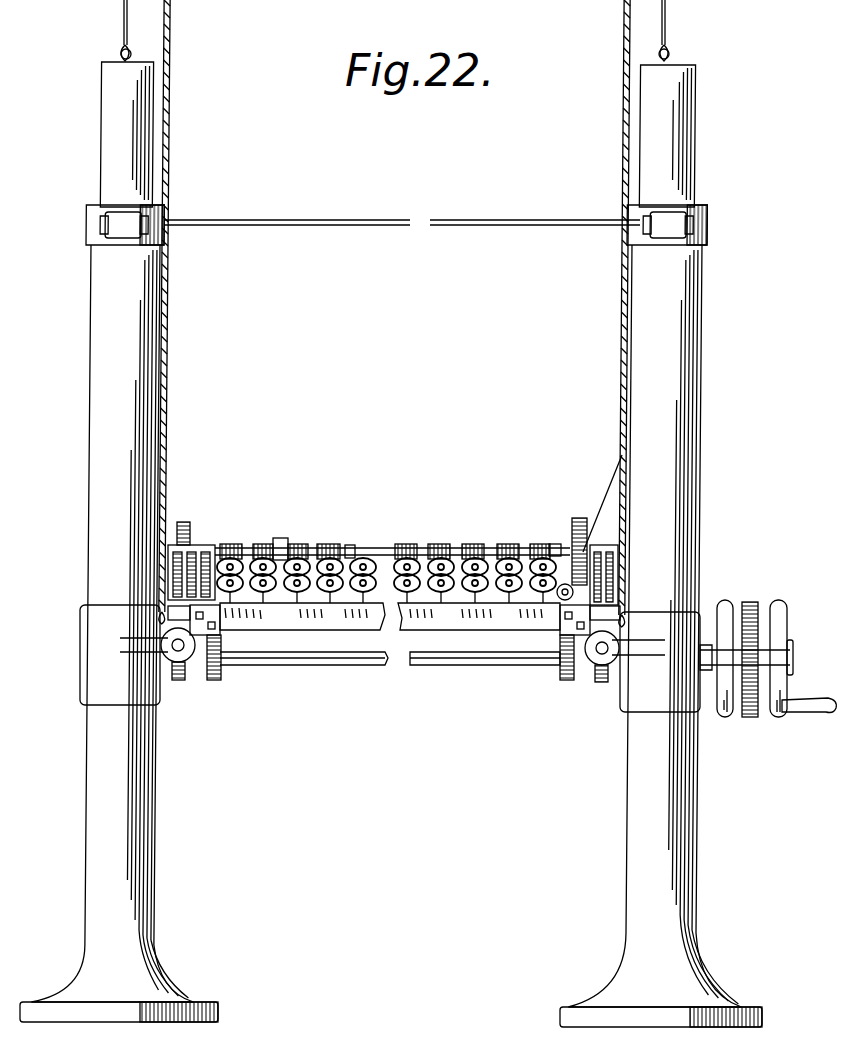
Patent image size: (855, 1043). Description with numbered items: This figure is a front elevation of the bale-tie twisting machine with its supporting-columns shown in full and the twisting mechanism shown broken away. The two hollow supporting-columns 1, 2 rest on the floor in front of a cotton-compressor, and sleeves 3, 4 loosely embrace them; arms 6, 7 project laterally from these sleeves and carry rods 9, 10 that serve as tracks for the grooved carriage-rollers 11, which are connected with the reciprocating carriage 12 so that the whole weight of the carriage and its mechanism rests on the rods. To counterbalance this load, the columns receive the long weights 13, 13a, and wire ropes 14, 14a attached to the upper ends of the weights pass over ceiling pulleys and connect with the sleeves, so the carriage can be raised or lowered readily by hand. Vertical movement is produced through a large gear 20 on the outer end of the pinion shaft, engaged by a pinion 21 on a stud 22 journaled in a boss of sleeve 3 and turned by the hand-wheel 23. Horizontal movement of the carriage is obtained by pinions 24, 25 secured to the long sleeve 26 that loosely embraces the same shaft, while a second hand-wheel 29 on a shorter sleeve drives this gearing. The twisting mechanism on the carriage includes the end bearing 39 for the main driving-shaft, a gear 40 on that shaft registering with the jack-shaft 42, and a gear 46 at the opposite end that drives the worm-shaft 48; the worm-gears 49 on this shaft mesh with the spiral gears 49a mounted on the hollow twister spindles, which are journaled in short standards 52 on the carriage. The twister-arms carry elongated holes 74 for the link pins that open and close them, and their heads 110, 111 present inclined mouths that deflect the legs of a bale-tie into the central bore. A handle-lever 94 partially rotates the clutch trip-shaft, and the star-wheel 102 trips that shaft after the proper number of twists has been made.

The supporting-column 1 is at (115, 623).
The supporting-column 2 is at (658, 626).
The sleeve 3 is at (120, 655).
The sleeve 4 is at (660, 662).
The arm 6 is at (630, 650).
The arm 7 is at (140, 650).
The rod 9 is at (170, 652).
The rod 10 is at (620, 656).
The grooved carriage-roller 11 is at (390, 682).
The reciprocating carriage 12 is at (385, 622).
The long weight 13 is at (126, 134).
The long weight 13a is at (667, 136).
The wire rope 14 is at (124, 22).
The wire rope 14a is at (172, 48).
The large gear 20 is at (752, 649).
The pinion 21 is at (760, 644).
The stud 22 is at (793, 657).
The hand-wheel 23 is at (784, 698).
The pinion 24 is at (558, 676).
The pinion 25 is at (224, 678).
The long sleeve 26 is at (390, 660).
The hand-wheel 29 is at (722, 648).
The end bearing 39 is at (194, 563).
The gear 40 is at (188, 523).
The jack-shaft 42 is at (302, 616).
The gear 46 is at (580, 518).
The worm-shaft 48 is at (356, 552).
The worm-gear 49 is at (312, 548).
The spiral gear 49a is at (538, 550).
The short standard 52 is at (479, 616).
The elongated hole 74 is at (612, 546).
The handle-lever 94 is at (616, 470).
The star-wheel 102 is at (548, 618).
The head 110 is at (366, 570).
The head 111 is at (376, 586).